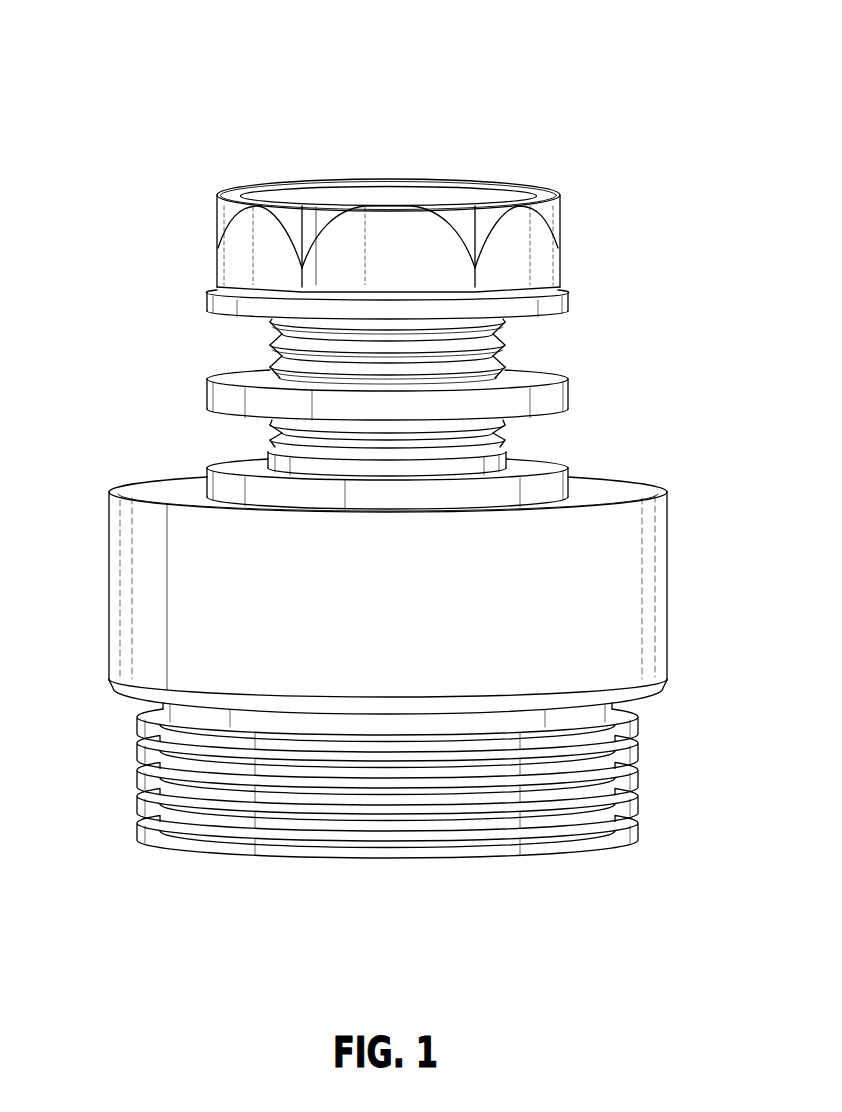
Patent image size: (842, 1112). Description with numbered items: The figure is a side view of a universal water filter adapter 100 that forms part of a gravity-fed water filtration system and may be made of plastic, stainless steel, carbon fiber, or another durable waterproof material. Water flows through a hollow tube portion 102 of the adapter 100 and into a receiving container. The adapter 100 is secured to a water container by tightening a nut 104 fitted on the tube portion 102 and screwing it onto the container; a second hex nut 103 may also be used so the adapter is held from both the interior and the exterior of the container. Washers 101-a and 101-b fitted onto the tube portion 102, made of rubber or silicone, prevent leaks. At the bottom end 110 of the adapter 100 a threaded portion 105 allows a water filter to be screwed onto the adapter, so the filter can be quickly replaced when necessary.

The universal water filter adapter 100 is at (135, 108).
The washer 101-a is at (207, 397).
The washer 101-b is at (207, 484).
The tube portion 102 is at (268, 462).
The hex nut 103 is at (217, 247).
The nut 104 is at (109, 595).
The threaded portion 105 is at (137, 782).
The bottom end 110 is at (593, 892).